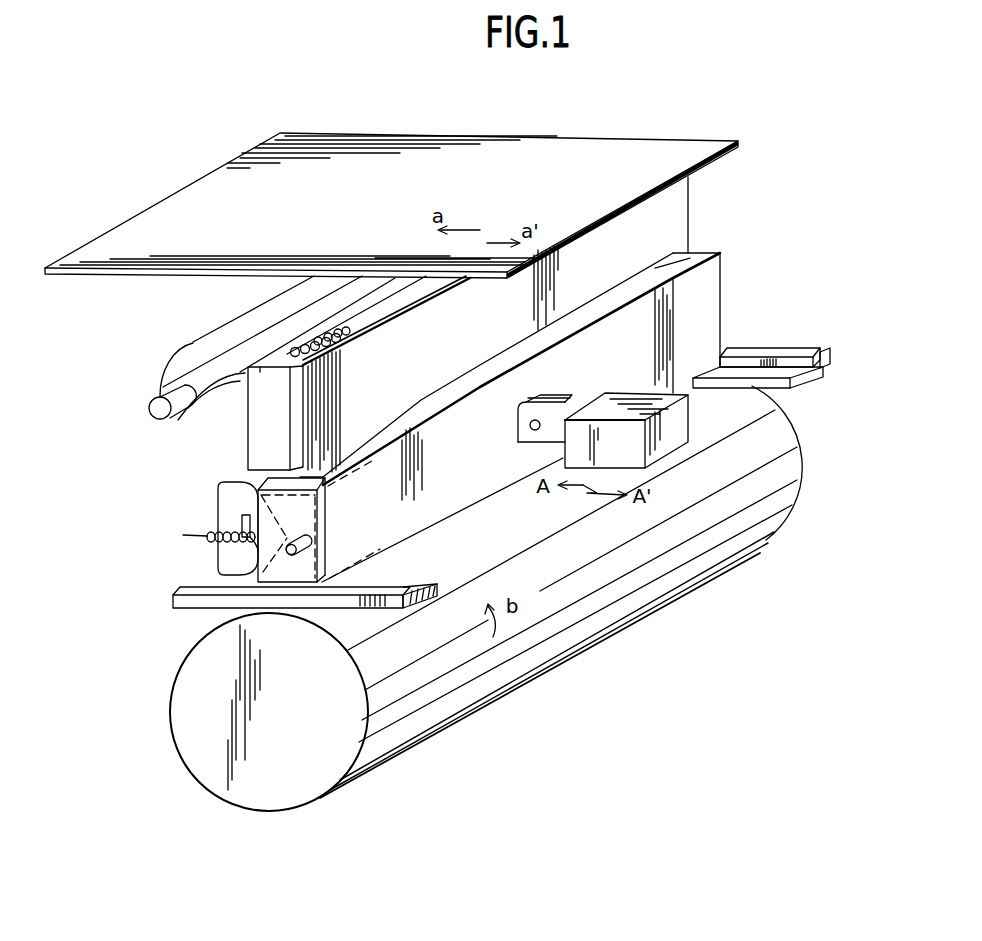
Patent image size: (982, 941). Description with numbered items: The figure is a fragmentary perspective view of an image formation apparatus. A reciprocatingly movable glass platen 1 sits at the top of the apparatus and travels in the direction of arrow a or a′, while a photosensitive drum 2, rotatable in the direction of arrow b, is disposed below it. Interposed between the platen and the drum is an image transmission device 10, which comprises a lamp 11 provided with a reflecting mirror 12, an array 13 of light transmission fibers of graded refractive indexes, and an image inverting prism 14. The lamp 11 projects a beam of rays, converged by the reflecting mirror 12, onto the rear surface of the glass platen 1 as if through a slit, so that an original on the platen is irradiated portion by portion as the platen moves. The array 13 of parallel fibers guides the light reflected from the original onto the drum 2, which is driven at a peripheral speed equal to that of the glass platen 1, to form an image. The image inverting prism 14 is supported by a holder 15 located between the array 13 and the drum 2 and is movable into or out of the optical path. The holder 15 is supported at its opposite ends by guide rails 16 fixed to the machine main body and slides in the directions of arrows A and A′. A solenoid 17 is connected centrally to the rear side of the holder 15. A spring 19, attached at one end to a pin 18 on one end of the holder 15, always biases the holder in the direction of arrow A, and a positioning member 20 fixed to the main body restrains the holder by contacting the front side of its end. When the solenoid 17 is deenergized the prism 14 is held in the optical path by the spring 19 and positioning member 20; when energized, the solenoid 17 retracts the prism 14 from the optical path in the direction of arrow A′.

The glass platen 1 is at (604, 151).
The photosensitive drum 2 is at (455, 712).
The image transmission device 10 is at (443, 343).
The lamp 11 is at (190, 404).
The reflecting mirror 12 is at (210, 336).
The array of light transmission fibers 13 is at (253, 407).
The image inverting prism 14 is at (676, 262).
The holder 15 is at (707, 306).
The guide rails 16 is at (792, 349).
The solenoid 17 is at (680, 432).
The pin 18 is at (317, 530).
The spring 19 is at (223, 542).
The positioning member 20 is at (223, 495).